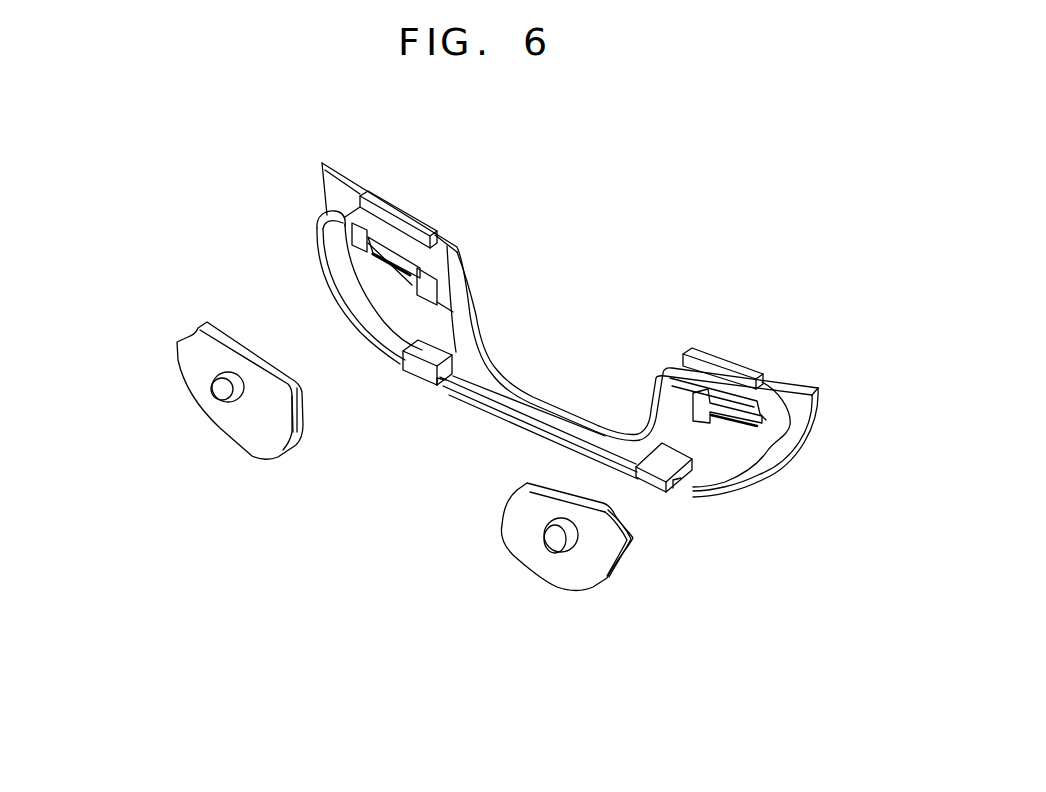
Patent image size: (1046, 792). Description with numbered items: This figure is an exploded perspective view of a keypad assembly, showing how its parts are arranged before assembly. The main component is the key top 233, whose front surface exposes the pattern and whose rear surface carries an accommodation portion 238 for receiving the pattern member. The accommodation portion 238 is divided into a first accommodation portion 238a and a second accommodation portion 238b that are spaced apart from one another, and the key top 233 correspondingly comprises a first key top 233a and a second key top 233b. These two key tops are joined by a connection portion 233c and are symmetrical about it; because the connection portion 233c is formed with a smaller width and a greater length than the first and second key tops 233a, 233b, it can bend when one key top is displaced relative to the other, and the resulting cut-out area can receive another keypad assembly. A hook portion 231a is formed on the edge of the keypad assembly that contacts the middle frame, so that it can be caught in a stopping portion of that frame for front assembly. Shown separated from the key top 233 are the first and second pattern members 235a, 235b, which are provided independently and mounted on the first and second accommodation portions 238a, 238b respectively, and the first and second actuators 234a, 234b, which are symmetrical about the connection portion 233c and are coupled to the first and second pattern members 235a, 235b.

The accommodation portion 238 is at (700, 133).
The first accommodation portion 238a is at (378, 290).
The second accommodation portion 238b is at (720, 435).
The key top 233 is at (505, 197).
The first key top 233a is at (462, 253).
The second key top 233b is at (668, 366).
The connection portion 233c is at (497, 409).
The hook portion 231a is at (663, 467).
The first actuator 234a is at (250, 432).
The second actuator 234b is at (547, 565).
The first pattern member 235a is at (303, 433).
The second pattern member 235b is at (627, 562).